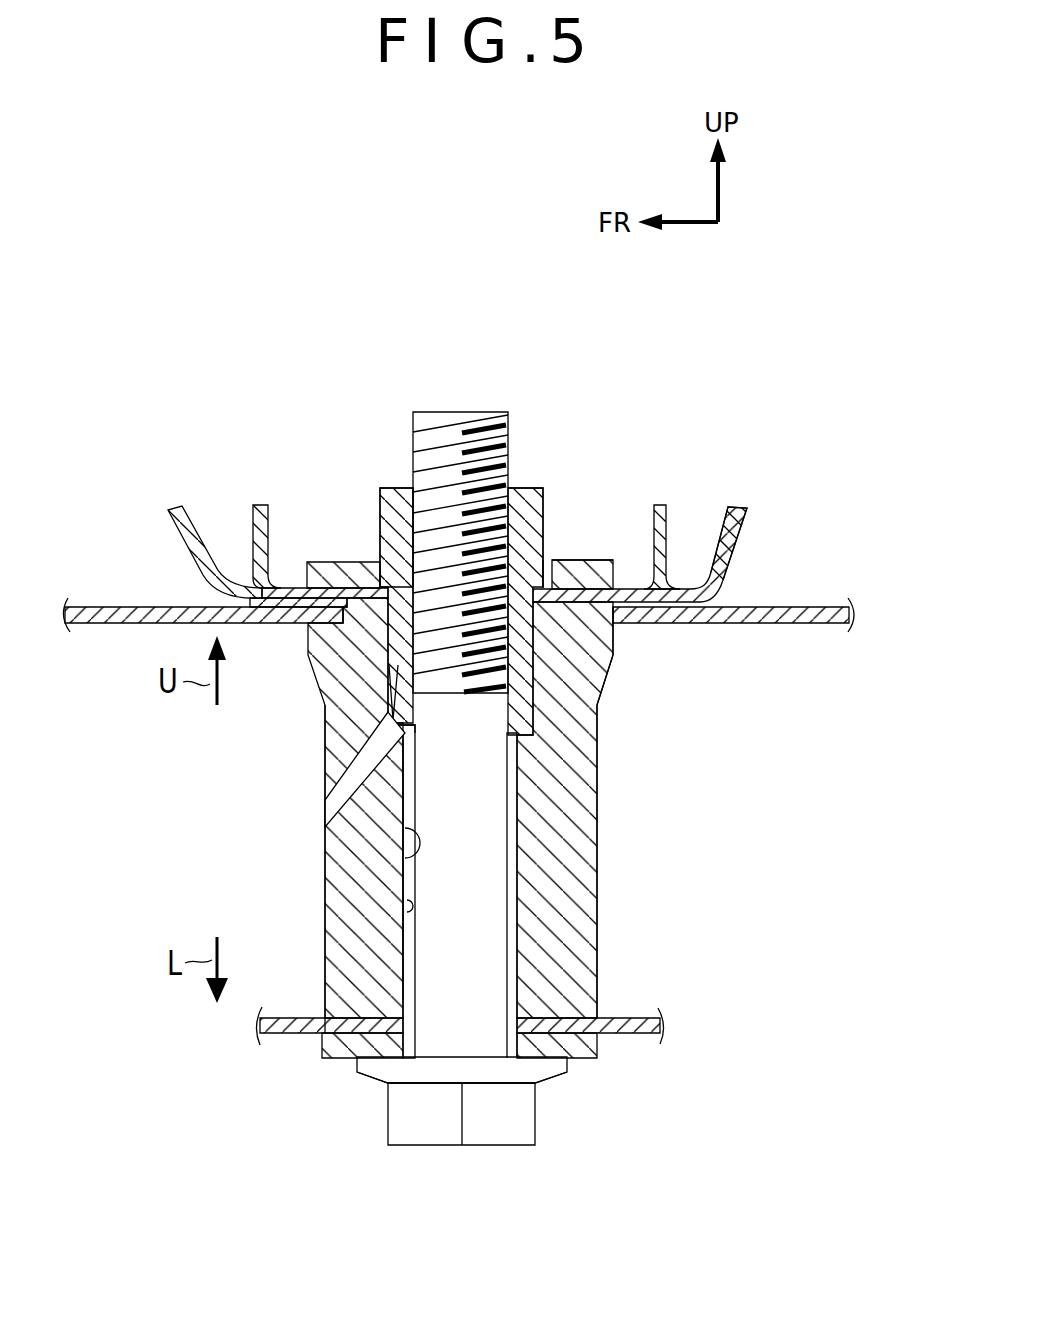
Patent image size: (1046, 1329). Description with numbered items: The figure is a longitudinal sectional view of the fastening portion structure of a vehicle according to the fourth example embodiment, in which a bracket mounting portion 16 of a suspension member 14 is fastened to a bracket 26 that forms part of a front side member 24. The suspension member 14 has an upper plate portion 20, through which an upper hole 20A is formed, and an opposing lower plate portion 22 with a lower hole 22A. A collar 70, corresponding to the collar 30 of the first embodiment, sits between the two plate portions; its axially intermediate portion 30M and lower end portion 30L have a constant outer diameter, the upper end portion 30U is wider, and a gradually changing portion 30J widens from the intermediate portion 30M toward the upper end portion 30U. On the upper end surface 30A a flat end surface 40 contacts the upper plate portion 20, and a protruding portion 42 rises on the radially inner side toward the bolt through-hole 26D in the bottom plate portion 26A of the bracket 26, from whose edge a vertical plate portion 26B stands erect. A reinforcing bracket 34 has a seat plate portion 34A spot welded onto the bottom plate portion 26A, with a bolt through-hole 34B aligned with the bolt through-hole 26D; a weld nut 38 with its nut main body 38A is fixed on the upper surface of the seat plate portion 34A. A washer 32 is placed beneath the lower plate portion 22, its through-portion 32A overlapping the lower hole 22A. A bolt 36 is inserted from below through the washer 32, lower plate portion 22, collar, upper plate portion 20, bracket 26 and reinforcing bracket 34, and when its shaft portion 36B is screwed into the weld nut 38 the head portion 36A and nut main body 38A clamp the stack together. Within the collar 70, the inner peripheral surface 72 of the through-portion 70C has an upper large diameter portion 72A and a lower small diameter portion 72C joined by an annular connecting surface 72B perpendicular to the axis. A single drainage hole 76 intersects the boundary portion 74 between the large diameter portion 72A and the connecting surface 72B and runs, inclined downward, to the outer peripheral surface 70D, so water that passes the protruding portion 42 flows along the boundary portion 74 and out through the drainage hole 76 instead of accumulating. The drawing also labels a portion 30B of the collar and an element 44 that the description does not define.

The suspension member 14 is at (825, 583).
The bracket mounting portion 16 is at (287, 440).
The upper plate portion 20 is at (771, 640).
The upper hole 20A is at (327, 636).
The lower plate portion 22 is at (650, 1007).
The lower hole 22A is at (414, 1012).
The front side member 24 is at (758, 517).
The bracket 26 is at (755, 552).
The bottom plate portion 26A is at (680, 585).
The vertical plate portion 26B is at (195, 515).
The bolt through-hole 26D is at (381, 498).
The collar 30 is at (505, 781).
The end surface 30A is at (324, 612).
The lower end portion of collar 30B is at (340, 1058).
The gradually changing portion 30J is at (605, 675).
The end portion on the other side in the axial direction 30L is at (600, 1012).
The axially intermediate portion 30M is at (600, 852).
The end portion on one side in the axial direction 30U is at (634, 644).
The washer 32 is at (345, 1063).
The through-portion 32A is at (432, 1045).
The reinforcing bracket 34 is at (685, 514).
The seat plate portion 34A is at (658, 512).
The bolt through-hole 34B is at (324, 615).
The bolt 36 is at (491, 1161).
The head portion 36A is at (535, 1120).
The shaft portion 36B is at (509, 425).
The weld nut 38 is at (553, 465).
The nut main body 38A is at (548, 560).
The flat end surface 40 is at (636, 617).
The protruding portion 42 is at (577, 560).
The gap 44 is at (556, 592).
The collar 70 is at (664, 812).
The through-portion 70C is at (407, 850).
The outer peripheral surface 70D is at (312, 893).
The inner peripheral surface 72 is at (424, 797).
The large diameter portion 72A is at (420, 668).
The connecting surface 72B is at (415, 740).
The small diameter portion 72C is at (407, 910).
The boundary portion 74 is at (391, 708).
The drainage hole 76 is at (337, 805).